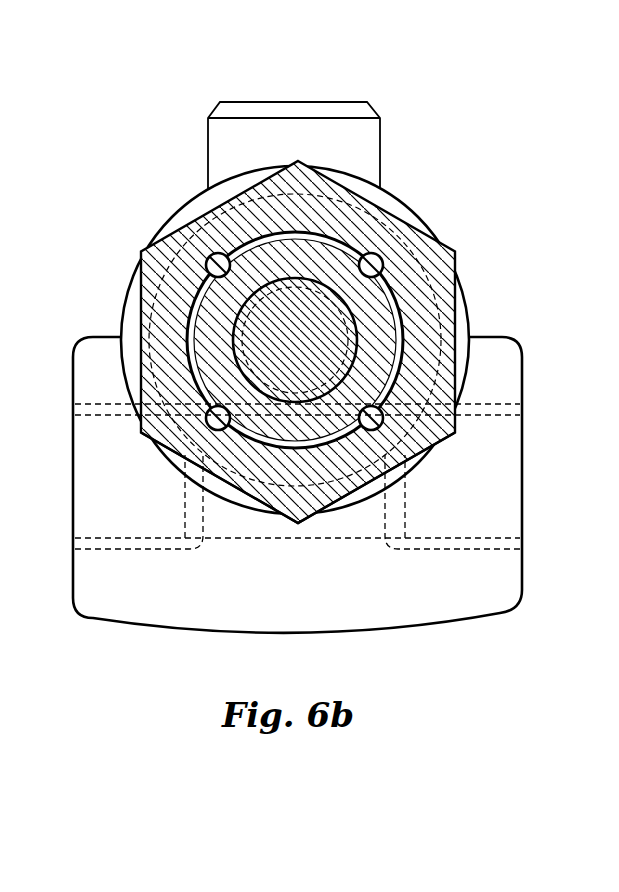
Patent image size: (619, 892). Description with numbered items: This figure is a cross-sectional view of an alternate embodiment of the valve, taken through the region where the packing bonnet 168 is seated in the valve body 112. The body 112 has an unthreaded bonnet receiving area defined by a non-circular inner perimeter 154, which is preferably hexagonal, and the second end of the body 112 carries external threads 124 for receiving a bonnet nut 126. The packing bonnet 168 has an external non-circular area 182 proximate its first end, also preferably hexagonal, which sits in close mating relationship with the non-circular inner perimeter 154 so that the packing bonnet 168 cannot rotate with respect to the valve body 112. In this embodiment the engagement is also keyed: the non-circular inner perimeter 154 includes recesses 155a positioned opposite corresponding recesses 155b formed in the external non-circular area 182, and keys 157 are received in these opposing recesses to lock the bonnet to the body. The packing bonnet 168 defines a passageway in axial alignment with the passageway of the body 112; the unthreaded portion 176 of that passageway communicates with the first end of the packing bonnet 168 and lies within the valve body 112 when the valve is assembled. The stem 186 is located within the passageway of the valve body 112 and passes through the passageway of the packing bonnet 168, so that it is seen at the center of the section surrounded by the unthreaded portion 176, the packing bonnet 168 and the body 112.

The body 112 is at (493, 336).
The external threads 124 is at (386, 232).
The bonnet nut 126 is at (308, 183).
The non-circular inner perimeter 154 is at (343, 322).
The recesses 155a is at (392, 426).
The recesses 155b is at (398, 377).
The keys 157 is at (192, 250).
The packing bonnet 168 is at (157, 347).
The unthreaded portion 176 is at (280, 325).
The external non-circular area 182 is at (300, 526).
The stem 186 is at (252, 310).